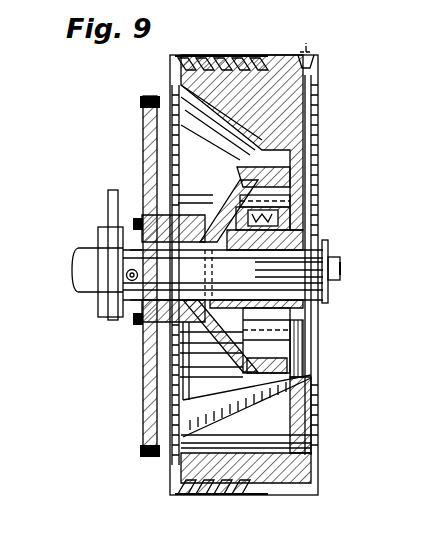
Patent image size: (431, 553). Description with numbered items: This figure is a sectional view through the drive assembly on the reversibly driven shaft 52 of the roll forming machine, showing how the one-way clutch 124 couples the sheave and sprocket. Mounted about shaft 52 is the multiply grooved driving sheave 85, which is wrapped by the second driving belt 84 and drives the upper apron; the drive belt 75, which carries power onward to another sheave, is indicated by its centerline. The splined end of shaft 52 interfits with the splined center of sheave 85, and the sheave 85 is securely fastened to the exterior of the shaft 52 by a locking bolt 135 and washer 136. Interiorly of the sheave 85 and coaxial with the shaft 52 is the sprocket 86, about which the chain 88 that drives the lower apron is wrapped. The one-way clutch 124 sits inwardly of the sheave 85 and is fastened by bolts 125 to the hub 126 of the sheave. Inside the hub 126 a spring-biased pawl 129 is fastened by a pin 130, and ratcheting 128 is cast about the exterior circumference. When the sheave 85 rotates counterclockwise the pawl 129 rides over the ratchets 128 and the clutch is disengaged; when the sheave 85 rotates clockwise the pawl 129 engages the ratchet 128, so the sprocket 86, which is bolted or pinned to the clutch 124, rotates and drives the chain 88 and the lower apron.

The reversibly driven shaft 52 is at (80, 252).
The drive belt 75 is at (306, 44).
The second driving belt 84 is at (240, 56).
The multiply grooved driving sheave 85 is at (286, 55).
The sprocket 86 is at (143, 135).
The chain 88 is at (150, 100).
The one-way clutch 124 is at (290, 187).
The bolts 125 is at (138, 325).
The hub 126 is at (300, 312).
The ratcheting 128 is at (303, 345).
The pawl 129 is at (290, 198).
The pin 130 is at (290, 218).
The locking bolt 135 is at (340, 272).
The washer 136 is at (328, 250).